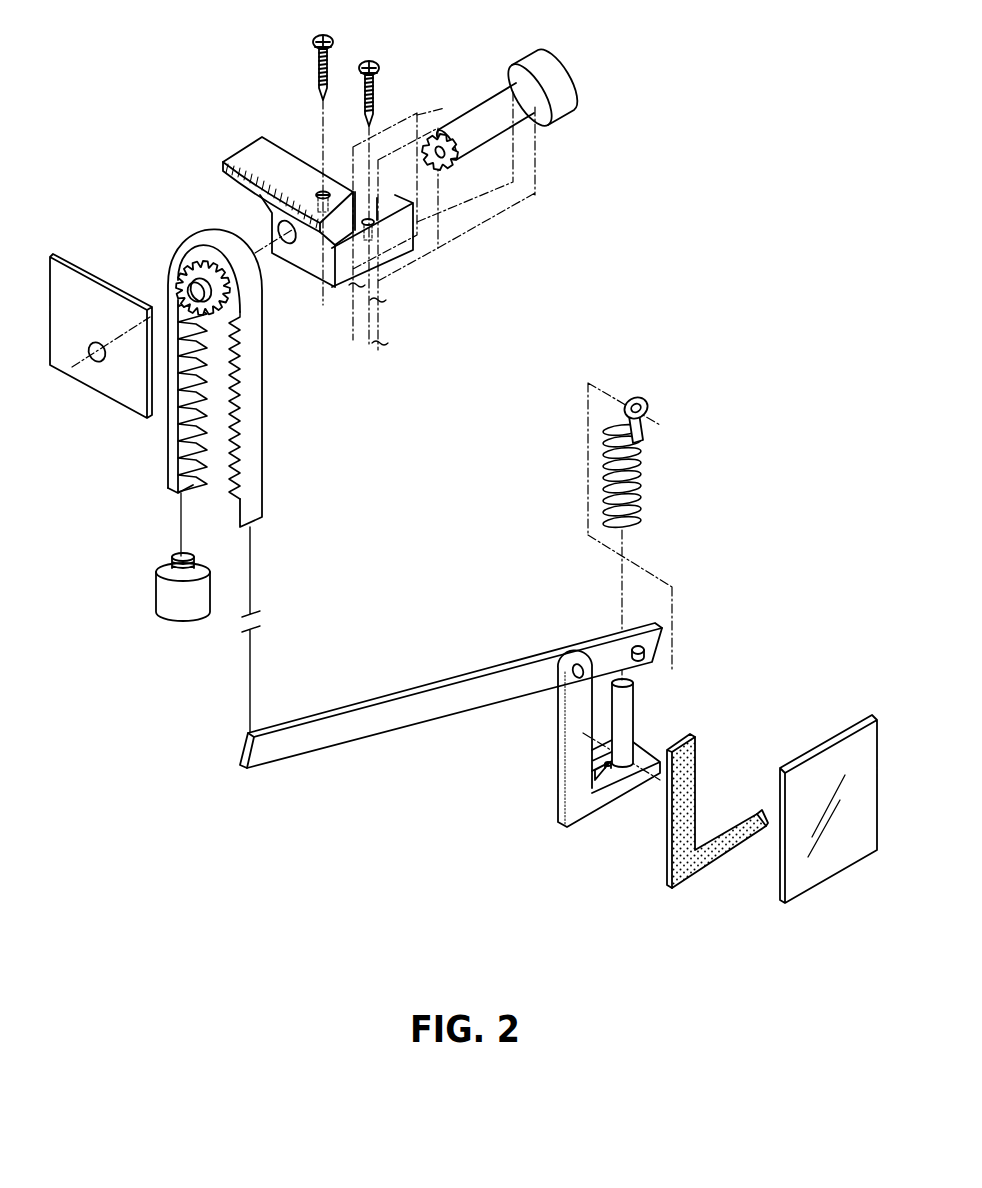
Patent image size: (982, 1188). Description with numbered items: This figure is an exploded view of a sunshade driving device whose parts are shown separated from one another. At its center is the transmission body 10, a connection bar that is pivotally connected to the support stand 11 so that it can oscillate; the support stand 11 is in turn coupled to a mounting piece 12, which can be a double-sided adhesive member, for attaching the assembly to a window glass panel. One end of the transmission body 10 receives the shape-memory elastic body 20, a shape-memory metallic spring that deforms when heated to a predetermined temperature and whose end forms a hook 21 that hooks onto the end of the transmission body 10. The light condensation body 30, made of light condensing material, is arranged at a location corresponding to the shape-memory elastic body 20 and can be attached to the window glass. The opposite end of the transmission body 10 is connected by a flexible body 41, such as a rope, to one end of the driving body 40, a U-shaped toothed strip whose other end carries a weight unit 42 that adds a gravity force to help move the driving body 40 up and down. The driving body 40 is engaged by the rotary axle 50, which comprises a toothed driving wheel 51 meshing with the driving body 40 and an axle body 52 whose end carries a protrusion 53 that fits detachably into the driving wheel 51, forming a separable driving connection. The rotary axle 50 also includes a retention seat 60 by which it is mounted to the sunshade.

The transmission body 10 is at (397, 710).
The support stand 11 is at (562, 665).
The mounting piece 12 is at (680, 860).
The shape-memory elastic body 20 is at (647, 457).
The hook 21 is at (642, 428).
The light condensation body 30 is at (838, 862).
The driving body 40 is at (256, 413).
The flexible body 41 is at (253, 578).
The weight unit 42 is at (163, 596).
The rotary axle 50 is at (485, 88).
The driving wheel 51 is at (196, 270).
The axle body 52 is at (566, 68).
The protrusion 53 is at (438, 140).
The retention seat 60 is at (246, 162).